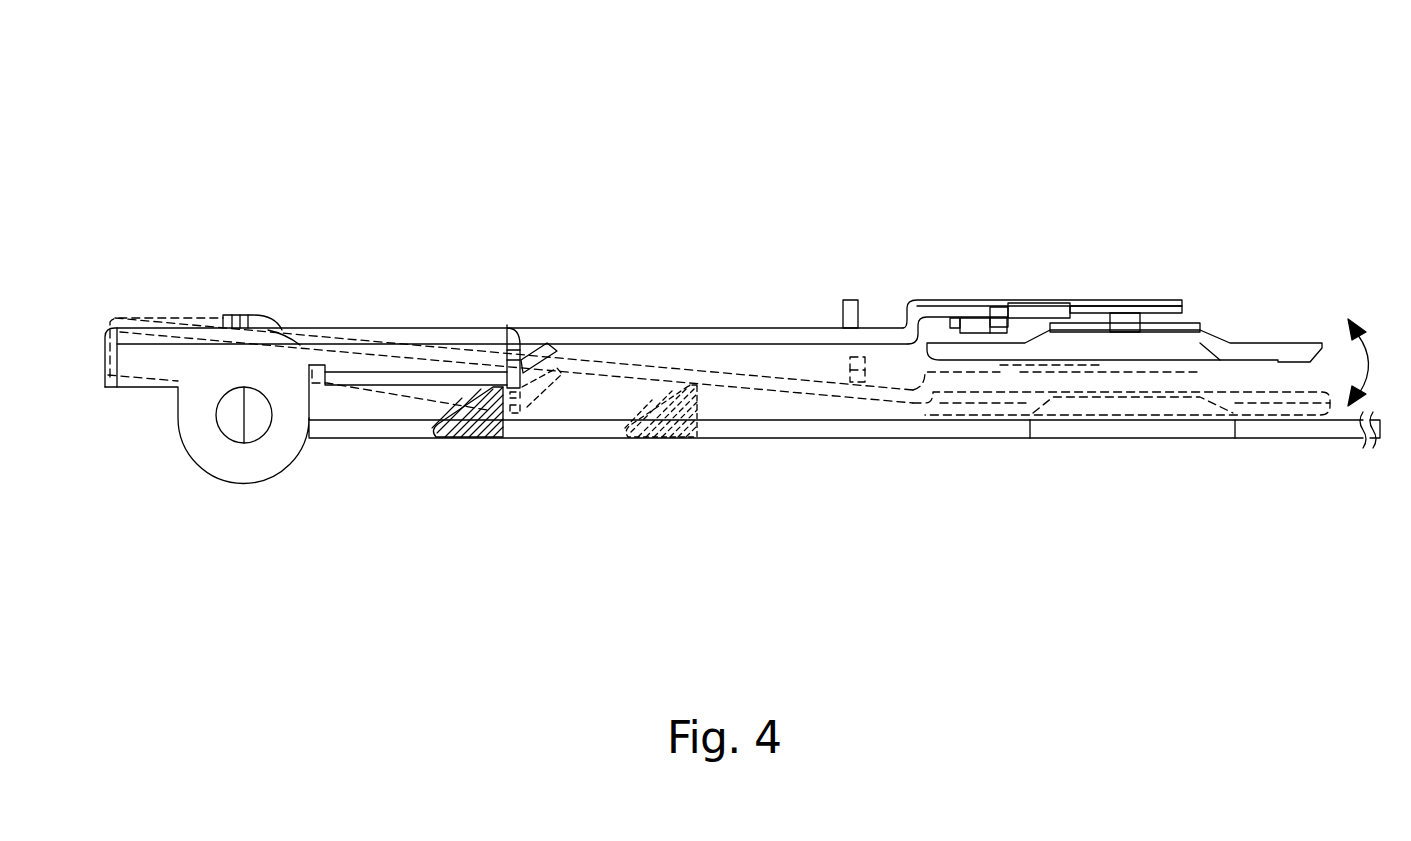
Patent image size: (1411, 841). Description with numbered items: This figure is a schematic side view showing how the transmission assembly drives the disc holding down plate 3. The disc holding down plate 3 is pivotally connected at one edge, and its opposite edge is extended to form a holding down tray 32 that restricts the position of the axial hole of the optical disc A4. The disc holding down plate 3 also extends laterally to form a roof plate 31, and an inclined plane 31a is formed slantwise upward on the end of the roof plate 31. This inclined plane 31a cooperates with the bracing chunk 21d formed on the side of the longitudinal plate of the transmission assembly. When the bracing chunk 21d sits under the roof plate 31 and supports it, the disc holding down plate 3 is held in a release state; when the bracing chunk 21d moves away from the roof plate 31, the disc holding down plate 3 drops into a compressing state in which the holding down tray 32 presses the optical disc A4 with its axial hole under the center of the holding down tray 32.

The disc holding down plate 3 is at (737, 250).
The roof plate 31 is at (423, 337).
The inclined plane 31a is at (522, 347).
The holding down tray 32 is at (1125, 303).
The bracing chunk 21d is at (470, 438).
The optical disc A4 is at (837, 437).